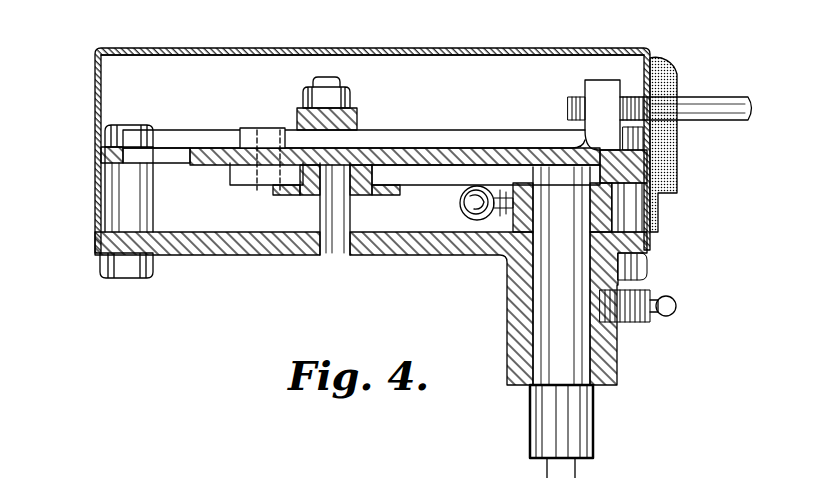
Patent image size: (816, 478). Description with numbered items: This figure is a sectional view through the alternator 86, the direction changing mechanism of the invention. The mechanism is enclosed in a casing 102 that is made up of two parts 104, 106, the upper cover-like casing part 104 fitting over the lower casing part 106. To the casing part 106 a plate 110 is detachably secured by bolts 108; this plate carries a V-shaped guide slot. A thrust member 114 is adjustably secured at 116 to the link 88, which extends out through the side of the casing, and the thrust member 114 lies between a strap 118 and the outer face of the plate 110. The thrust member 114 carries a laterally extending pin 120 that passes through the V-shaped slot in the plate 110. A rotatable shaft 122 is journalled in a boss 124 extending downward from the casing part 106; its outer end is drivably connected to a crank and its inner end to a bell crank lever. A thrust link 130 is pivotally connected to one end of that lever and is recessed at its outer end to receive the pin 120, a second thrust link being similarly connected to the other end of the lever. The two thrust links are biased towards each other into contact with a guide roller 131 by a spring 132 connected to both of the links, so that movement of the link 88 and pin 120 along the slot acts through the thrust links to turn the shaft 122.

The alternator 86 is at (487, 46).
The casing 102 is at (205, 48).
The casing part 104 is at (365, 50).
The link 88 is at (706, 96).
The adjustable securement 116 is at (602, 80).
The thrust member 114 is at (423, 130).
The plate 110 is at (485, 158).
The strap 118 is at (355, 118).
The pin 120 is at (272, 128).
The guide roller 131 is at (302, 197).
The thrust link 130 is at (436, 182).
The spring 132 is at (472, 220).
The shaft 122 is at (543, 382).
The casing part 106 is at (262, 257).
The boss 124 is at (507, 320).
The bolts 108 is at (105, 212).